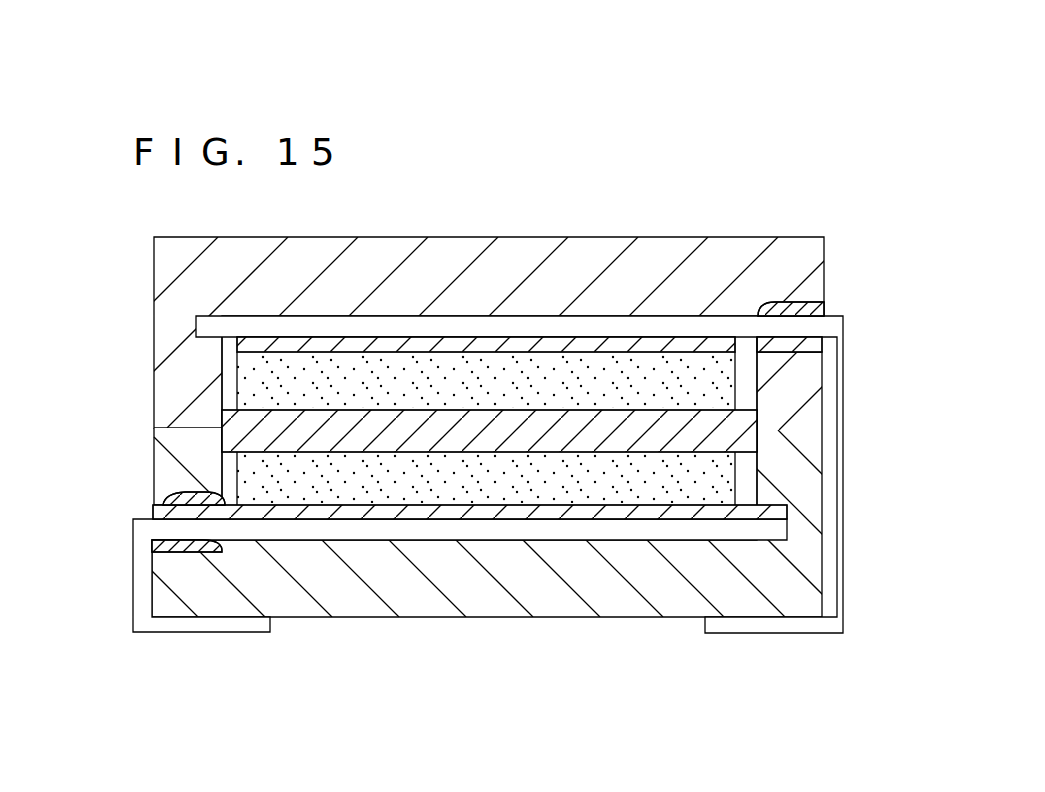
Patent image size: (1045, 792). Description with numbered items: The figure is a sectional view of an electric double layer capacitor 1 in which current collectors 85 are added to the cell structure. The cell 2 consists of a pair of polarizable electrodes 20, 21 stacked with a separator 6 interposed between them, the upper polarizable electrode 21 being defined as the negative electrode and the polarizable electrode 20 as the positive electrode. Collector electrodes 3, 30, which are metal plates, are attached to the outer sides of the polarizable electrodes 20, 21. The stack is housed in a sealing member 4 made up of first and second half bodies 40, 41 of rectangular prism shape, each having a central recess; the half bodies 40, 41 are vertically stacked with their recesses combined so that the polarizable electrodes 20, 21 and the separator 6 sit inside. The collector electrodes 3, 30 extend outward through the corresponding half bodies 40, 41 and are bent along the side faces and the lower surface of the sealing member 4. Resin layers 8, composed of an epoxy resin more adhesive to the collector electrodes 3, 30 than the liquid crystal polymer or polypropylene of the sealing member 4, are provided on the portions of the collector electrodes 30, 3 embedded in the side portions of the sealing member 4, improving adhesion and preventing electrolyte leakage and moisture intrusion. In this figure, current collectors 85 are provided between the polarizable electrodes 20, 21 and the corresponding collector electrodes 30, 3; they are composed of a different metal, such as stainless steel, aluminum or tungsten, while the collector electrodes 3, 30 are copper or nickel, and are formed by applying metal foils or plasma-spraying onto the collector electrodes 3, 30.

The electric double layer capacitor 1 is at (518, 476).
The cell 2 is at (547, 495).
The collector electrode 3 is at (833, 328).
The sealing member 4 is at (518, 427).
The first half body 40 is at (160, 392).
The second half body 41 is at (152, 457).
The separator 6 is at (748, 432).
The resin layer 8 is at (810, 309).
The polarizable electrode 20 is at (717, 482).
The polarizable electrode 21 is at (718, 385).
The collector electrode 30 is at (193, 623).
The current collector 85 is at (742, 356).